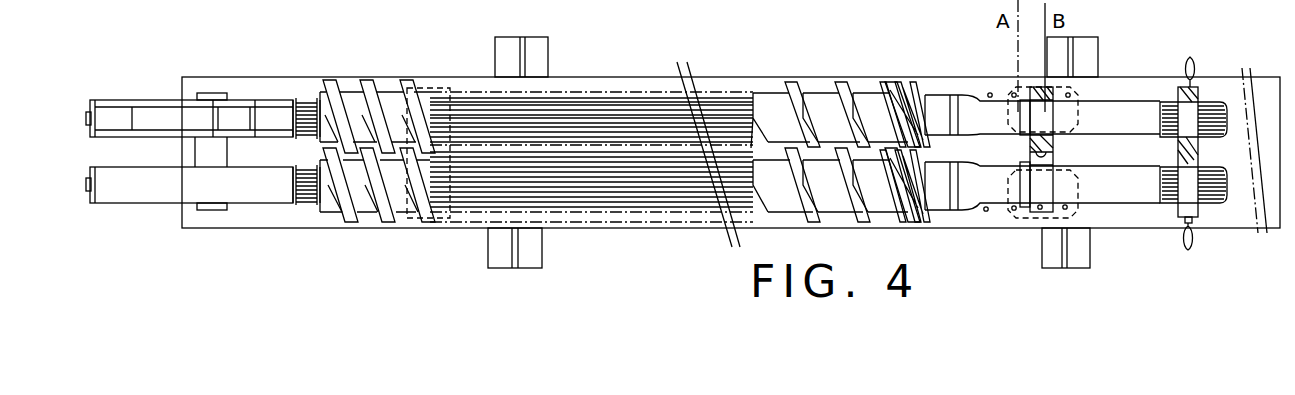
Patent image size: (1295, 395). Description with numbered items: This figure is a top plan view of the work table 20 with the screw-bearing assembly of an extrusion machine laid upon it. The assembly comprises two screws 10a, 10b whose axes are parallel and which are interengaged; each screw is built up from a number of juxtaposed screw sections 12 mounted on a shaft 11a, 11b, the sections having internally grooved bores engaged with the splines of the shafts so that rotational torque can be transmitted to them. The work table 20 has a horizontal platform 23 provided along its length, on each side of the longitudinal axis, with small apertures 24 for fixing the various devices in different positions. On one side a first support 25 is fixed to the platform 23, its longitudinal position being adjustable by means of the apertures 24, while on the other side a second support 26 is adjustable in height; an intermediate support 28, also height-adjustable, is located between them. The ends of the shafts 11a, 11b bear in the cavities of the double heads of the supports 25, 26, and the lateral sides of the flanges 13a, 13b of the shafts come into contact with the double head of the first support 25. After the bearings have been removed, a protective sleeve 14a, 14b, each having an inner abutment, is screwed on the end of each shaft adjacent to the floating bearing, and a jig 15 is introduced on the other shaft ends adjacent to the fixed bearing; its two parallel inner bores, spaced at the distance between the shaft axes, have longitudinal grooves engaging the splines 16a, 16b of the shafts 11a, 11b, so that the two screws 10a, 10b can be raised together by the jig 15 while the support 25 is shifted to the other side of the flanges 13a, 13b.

The screw 10a is at (645, 210).
The screw 10b is at (618, 92).
The shaft 11a is at (1135, 190).
The shaft 11b is at (1135, 100).
The screw sections 12 is at (773, 105).
The flange 13a is at (1023, 200).
The flange 13b is at (1025, 95).
The protective sleeve 14a is at (113, 190).
The protective sleeve 14b is at (125, 100).
The jig 15 is at (1197, 95).
The splines 16a is at (1215, 195).
The splines 16b is at (1228, 100).
The work table 20 is at (566, 236).
The horizontal platform 23 is at (720, 90).
The small apertures 24 is at (988, 93).
The first support 25 is at (1045, 213).
The second support 26 is at (207, 211).
The intermediate support 28 is at (448, 210).